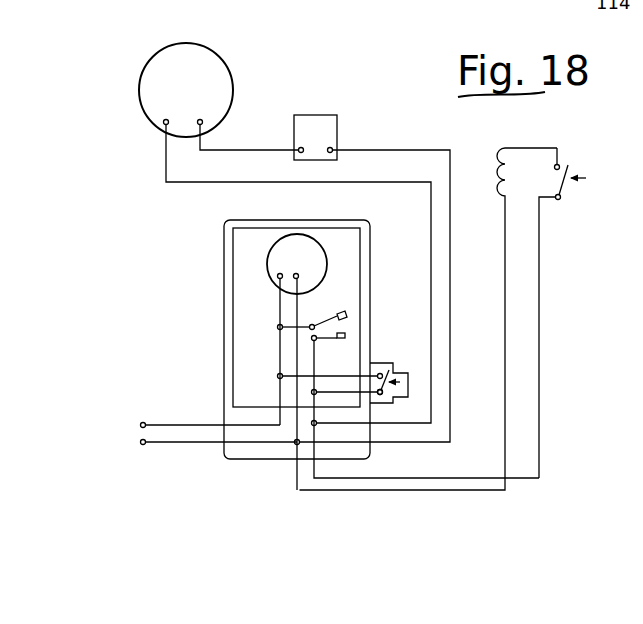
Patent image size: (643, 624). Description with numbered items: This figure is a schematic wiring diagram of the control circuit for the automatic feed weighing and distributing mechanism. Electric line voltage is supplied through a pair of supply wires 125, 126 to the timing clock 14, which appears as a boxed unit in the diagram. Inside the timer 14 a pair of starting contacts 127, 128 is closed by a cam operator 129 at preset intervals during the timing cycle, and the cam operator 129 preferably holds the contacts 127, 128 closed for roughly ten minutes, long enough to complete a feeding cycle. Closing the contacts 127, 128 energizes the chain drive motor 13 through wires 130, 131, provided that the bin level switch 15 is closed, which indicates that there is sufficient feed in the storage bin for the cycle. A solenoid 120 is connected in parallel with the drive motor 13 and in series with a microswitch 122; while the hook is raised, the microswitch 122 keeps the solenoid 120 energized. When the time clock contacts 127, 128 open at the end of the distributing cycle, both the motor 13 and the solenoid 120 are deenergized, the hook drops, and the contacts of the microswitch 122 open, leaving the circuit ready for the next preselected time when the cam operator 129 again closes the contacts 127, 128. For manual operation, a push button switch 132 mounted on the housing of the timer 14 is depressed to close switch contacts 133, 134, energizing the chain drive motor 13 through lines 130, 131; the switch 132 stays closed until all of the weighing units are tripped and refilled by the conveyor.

The chain drive motor 13 is at (231, 73).
The timing clock 14 is at (221, 267).
The bin level switch 15 is at (318, 115).
The solenoid 120 is at (498, 167).
The microswitch 122 is at (568, 167).
The supply wire 125 is at (170, 423).
The supply wire 126 is at (164, 445).
The starting contact 127 is at (353, 334).
The starting contact 128 is at (340, 339).
The cam operator 129 is at (323, 318).
The wire 130 is at (352, 182).
The wire 131 is at (357, 150).
The push button switch 132 is at (415, 377).
The switch contact 133 is at (383, 395).
The switch contact 134 is at (383, 370).